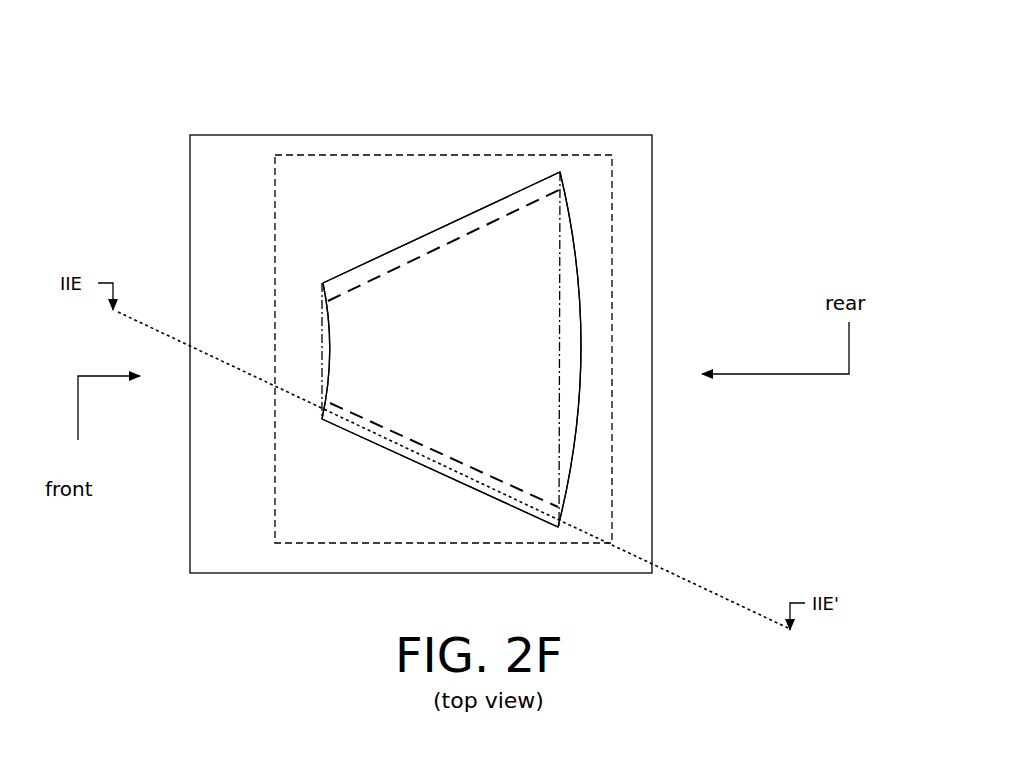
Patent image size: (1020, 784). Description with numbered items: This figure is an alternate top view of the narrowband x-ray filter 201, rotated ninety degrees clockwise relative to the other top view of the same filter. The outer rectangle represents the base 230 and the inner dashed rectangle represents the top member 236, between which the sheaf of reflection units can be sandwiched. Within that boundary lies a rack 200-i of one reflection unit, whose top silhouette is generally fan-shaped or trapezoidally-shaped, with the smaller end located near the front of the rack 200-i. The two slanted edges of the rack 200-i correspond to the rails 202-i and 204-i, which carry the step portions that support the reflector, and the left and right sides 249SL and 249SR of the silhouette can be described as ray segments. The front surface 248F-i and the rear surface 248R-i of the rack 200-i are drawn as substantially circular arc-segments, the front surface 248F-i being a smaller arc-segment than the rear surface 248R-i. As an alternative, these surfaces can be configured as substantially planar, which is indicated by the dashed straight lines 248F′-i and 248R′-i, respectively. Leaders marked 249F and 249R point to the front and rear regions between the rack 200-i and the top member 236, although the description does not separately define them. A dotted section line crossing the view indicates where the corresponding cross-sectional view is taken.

The narrowband x-ray filter 201 is at (191, 39).
The rack 200-i is at (318, 278).
The rail 202-i is at (420, 237).
The rail 204-i is at (440, 478).
The base 230 is at (460, 331).
The top member 236 is at (521, 349).
The front surface 248F-i is at (234, 340).
The dashed straight line (planar front surface alternative) 248F′-i is at (227, 354).
The rear surface 248R-i is at (708, 344).
The dashed straight line (planar rear surface alternative) 248R′-i is at (684, 349).
The front gap 249F is at (308, 332).
The rear gap 249R is at (614, 330).
The left side 249SL is at (423, 242).
The right side 249SR is at (414, 455).